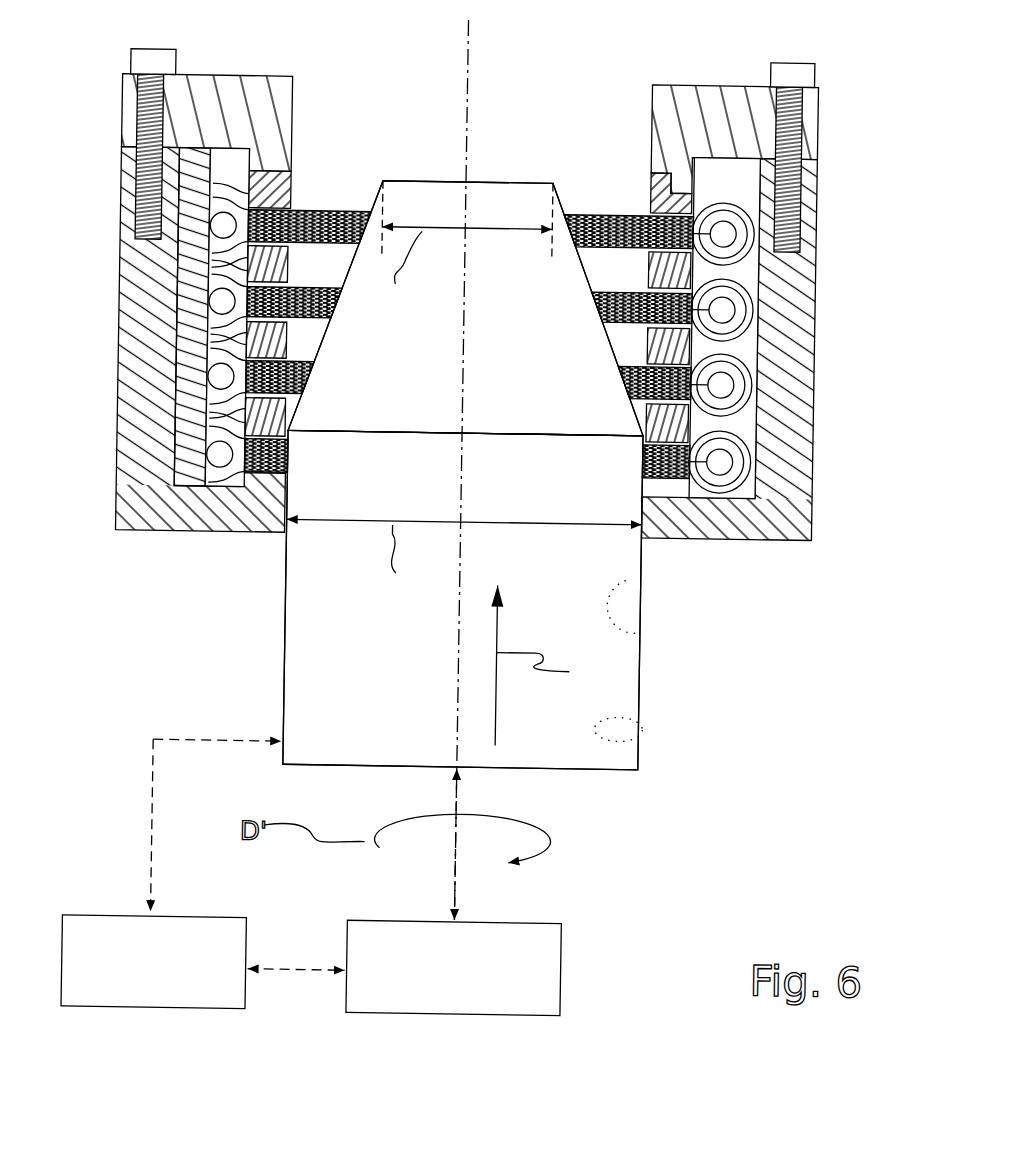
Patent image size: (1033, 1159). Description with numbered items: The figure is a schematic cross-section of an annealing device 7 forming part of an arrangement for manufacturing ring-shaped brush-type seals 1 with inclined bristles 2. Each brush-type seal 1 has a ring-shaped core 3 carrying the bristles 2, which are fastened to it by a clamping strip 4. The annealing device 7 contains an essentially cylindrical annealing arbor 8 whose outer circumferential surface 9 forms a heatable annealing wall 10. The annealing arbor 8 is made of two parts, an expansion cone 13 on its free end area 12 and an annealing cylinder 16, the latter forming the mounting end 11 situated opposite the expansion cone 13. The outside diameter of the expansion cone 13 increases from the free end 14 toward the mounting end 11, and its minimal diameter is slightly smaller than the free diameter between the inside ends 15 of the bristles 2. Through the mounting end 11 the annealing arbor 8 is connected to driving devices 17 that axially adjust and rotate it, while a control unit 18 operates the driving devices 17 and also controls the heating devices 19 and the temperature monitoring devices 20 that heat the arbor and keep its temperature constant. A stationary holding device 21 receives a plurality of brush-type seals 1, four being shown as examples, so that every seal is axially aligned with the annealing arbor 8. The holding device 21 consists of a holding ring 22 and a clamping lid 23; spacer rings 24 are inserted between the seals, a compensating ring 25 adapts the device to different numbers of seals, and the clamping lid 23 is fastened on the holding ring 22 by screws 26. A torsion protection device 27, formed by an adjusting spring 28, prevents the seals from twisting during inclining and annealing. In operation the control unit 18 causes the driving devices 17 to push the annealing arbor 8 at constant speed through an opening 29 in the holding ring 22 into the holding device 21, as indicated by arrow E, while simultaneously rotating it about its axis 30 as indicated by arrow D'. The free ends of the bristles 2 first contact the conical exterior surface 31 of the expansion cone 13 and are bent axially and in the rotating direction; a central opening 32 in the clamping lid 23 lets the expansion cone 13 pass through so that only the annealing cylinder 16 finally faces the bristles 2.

The brush-type seal 1 is at (350, 116).
The bristles 2 is at (630, 368).
The ring-shaped core 3 is at (719, 229).
The clamping strip 4 is at (218, 204).
The annealing device 7 is at (774, 764).
The annealing arbor 8 is at (285, 616).
The outer circumferential surface 9 is at (643, 667).
The annealing wall 10 is at (463, 600).
The mounting end 11 is at (604, 776).
The free end area 12 is at (430, 194).
The expansion cone 13 is at (489, 162).
The free end 14 is at (537, 179).
The inside ends of the bristles 15 is at (352, 209).
The annealing cylinder 16 is at (308, 664).
The driving devices 17 is at (568, 962).
The control unit 18 is at (98, 921).
The heating devices 19 is at (636, 716).
The temperature monitoring devices 20 is at (642, 628).
The holding device 21 is at (99, 568).
The holding ring 22 is at (787, 535).
The clamping lid 23 is at (677, 93).
The spacer rings 24 is at (258, 270).
The compensating ring 25 is at (648, 195).
The screws 26 is at (150, 66).
The torsion protection device 27 is at (190, 497).
The adjusting spring 28 is at (190, 349).
The opening 29 is at (277, 545).
The axis 30 is at (460, 497).
The conical exterior surface 31 is at (467, 307).
The central opening 32 is at (304, 66).